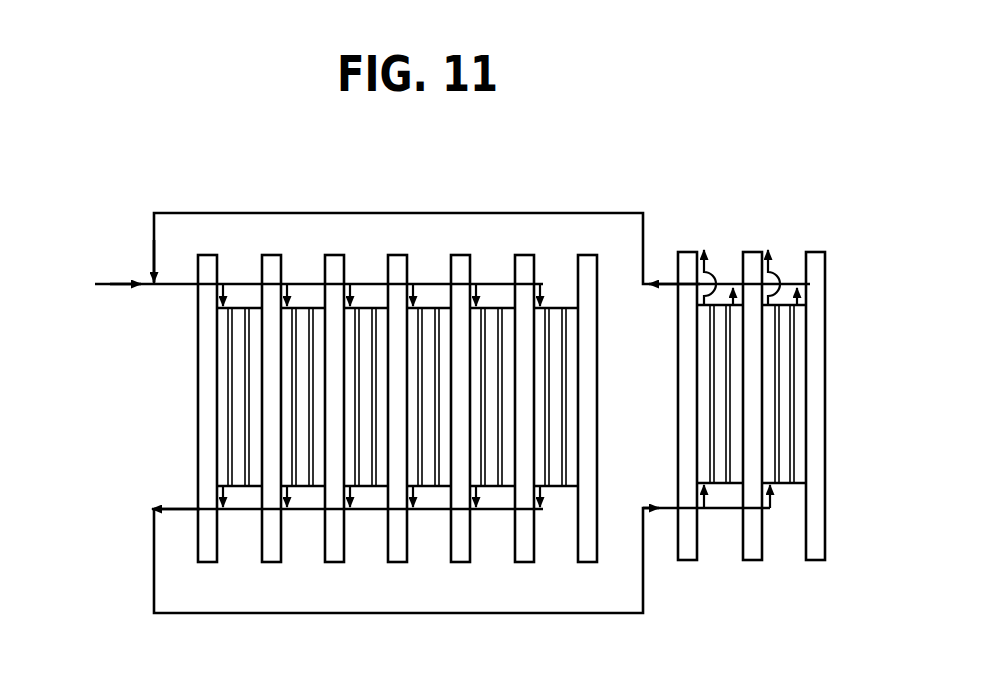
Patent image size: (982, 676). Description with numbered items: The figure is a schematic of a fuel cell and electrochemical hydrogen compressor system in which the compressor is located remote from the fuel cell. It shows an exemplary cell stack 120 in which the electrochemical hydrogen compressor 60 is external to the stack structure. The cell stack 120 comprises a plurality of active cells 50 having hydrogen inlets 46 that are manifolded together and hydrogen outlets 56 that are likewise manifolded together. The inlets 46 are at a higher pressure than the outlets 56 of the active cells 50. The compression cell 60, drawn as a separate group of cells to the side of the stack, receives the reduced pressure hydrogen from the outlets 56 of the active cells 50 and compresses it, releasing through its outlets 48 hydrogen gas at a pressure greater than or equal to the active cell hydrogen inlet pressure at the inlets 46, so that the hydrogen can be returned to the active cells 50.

The cell stack 120 is at (92, 249).
The hydrogen inlets 46 is at (124, 302).
The hydrogen outlets 56 is at (172, 492).
The active cells 50 is at (363, 556).
The electrochemical hydrogen compressor 60 is at (789, 199).
The outlets 48 is at (736, 300).